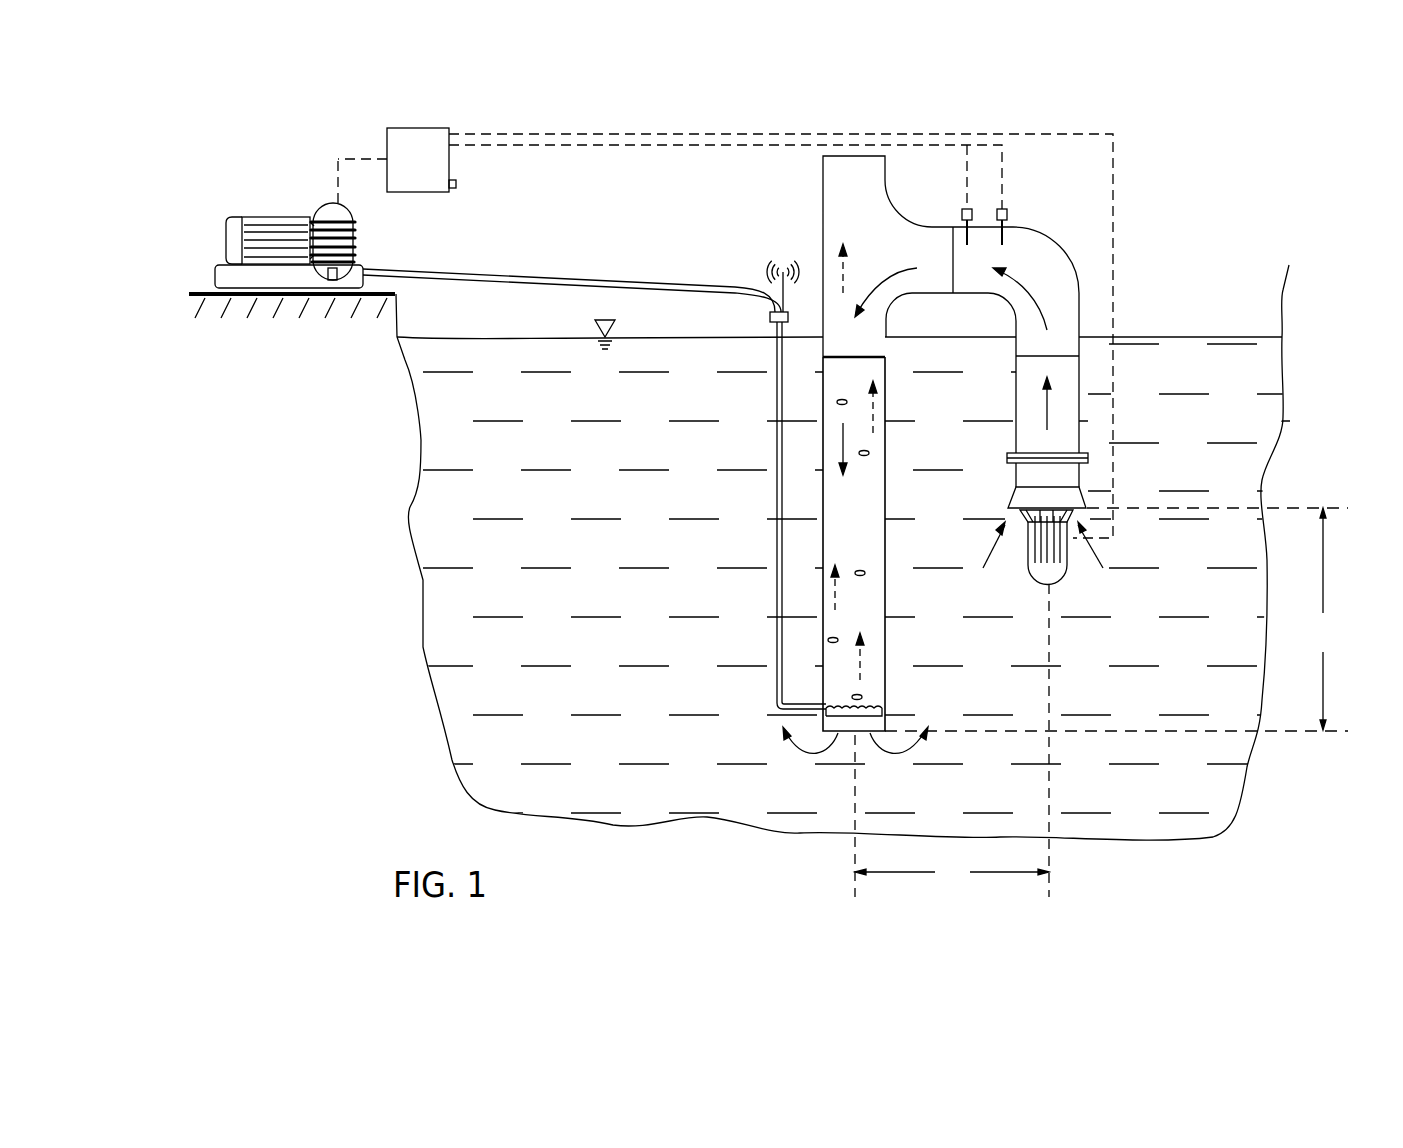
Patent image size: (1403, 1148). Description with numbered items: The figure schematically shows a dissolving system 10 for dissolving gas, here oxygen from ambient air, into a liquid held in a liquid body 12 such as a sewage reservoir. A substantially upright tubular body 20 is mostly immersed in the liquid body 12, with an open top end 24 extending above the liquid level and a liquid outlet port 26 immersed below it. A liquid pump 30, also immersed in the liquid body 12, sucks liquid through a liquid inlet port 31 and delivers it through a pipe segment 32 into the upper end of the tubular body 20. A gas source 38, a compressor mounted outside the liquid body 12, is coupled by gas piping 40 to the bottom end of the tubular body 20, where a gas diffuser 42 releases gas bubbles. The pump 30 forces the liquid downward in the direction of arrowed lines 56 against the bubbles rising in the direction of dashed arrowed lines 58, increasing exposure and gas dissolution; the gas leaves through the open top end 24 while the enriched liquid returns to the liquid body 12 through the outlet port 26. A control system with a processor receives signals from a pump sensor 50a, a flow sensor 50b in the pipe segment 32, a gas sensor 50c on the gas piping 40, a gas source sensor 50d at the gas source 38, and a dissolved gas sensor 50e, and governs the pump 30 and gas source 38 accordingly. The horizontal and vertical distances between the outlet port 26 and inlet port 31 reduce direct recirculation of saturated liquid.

The dissolving system 10 is at (287, 127).
The liquid body 12 is at (1235, 378).
The tubular body 20 is at (823, 470).
The open top end 24 is at (856, 158).
The liquid outlet port 26 is at (853, 733).
The liquid pump 30 is at (1055, 555).
The liquid inlet port 31 is at (1073, 510).
The pipe segment 32 is at (1047, 275).
The gas source 38 is at (258, 217).
The gas piping 40 is at (777, 443).
The gas diffuser 42 is at (834, 713).
The pump sensor 50a is at (456, 184).
The flow sensor 50b is at (1008, 214).
The gas sensor 50c is at (770, 316).
The gas source sensor 50d is at (345, 270).
The dissolved gas sensor 50e is at (965, 209).
The arrowed lines 56 is at (873, 287).
The dashed arrowed lines 58 is at (837, 593).